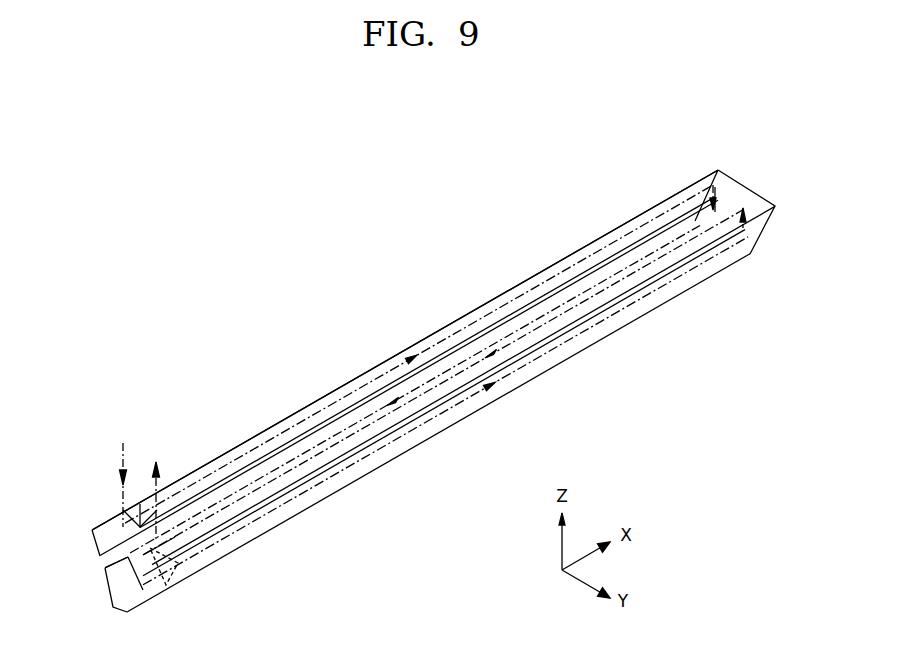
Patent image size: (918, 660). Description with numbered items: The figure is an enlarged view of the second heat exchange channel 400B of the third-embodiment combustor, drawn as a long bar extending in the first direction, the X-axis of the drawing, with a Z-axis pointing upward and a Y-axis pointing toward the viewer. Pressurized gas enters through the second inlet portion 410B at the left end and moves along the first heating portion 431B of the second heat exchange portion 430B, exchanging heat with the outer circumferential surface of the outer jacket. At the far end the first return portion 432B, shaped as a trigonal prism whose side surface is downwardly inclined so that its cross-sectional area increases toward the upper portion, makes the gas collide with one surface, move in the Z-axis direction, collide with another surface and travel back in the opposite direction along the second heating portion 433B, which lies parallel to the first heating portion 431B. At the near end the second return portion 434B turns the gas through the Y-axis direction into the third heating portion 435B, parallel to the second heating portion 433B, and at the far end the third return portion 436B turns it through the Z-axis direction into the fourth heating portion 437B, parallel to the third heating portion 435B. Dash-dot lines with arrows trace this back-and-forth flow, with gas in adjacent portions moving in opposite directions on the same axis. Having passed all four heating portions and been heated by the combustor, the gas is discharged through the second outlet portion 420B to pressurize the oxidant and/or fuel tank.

The second heat exchange channel 400B is at (113, 303).
The second inlet portion 410B is at (107, 531).
The second outlet portion 420B is at (170, 565).
The second heat exchange portion 430B is at (463, 298).
The first heating portion 431B is at (270, 432).
The first return portion 432B is at (715, 183).
The second heating portion 433B is at (386, 407).
The second return portion 434B is at (120, 587).
The third heating portion 435B is at (573, 358).
The third return portion 436B is at (775, 200).
The fourth heating portion 437B is at (405, 367).